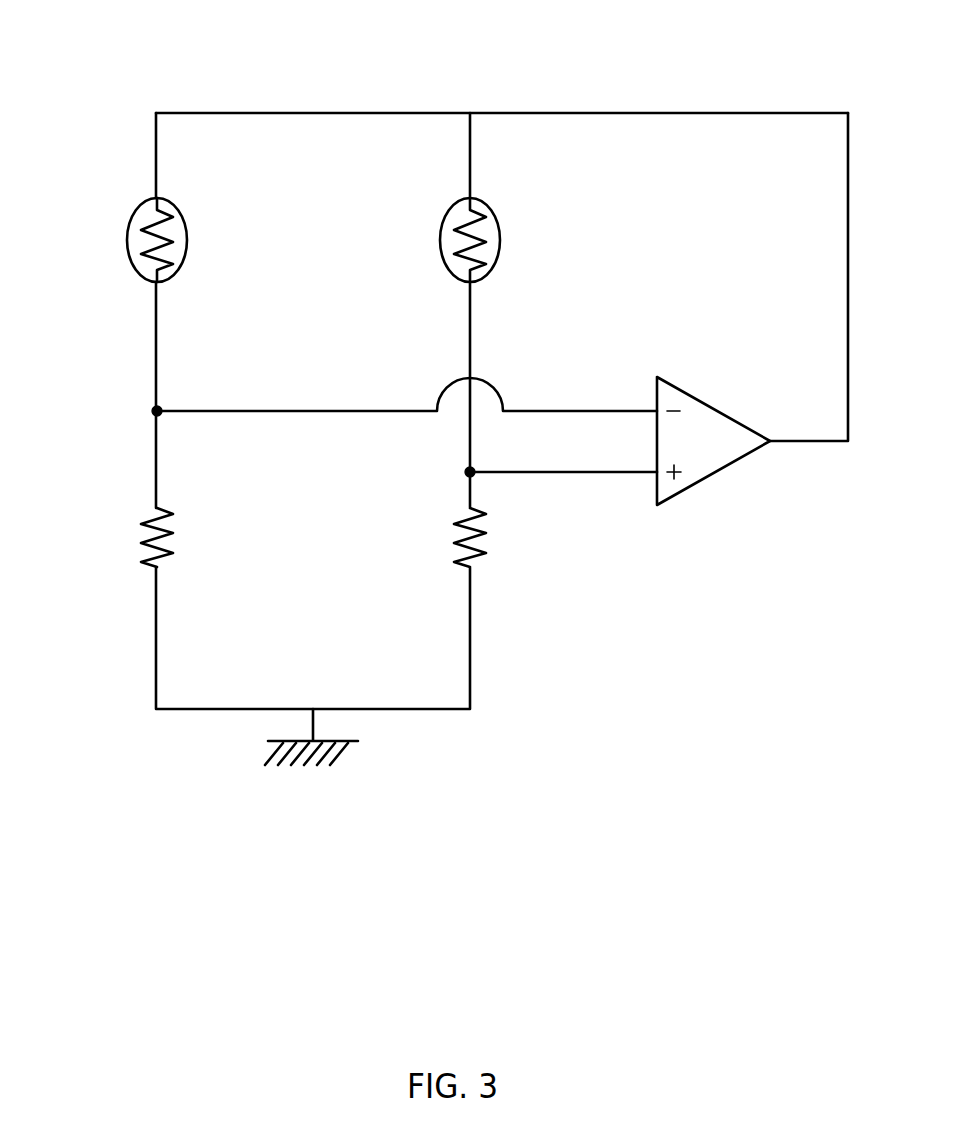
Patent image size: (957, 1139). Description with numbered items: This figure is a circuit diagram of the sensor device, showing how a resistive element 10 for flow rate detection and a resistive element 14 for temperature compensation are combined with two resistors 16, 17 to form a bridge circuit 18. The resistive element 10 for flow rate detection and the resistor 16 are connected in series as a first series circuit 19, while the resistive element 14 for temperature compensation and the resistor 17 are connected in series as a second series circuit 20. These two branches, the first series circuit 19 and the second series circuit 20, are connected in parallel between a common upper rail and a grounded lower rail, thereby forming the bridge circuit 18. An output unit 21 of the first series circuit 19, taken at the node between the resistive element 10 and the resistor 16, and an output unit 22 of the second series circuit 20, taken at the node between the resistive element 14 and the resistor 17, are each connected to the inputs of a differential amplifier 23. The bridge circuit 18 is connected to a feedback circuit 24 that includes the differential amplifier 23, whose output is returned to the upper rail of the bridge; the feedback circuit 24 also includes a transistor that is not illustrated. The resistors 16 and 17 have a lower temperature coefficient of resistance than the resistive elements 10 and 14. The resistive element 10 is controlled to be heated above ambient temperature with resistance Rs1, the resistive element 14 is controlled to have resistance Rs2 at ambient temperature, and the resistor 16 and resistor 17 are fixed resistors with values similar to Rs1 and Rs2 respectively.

The resistive element for flow rate detection 10 is at (441, 254).
The resistive element for temperature compensation 14 is at (127, 244).
The resistor 16 is at (486, 535).
The resistor 17 is at (141, 542).
The bridge circuit 18 is at (342, 96).
The first series circuit 19 is at (470, 158).
The second series circuit 20 is at (156, 158).
The output unit 21 is at (466, 475).
The output unit 22 is at (152, 413).
The differential amplifier 23 is at (712, 475).
The feedback circuit 24 is at (810, 98).